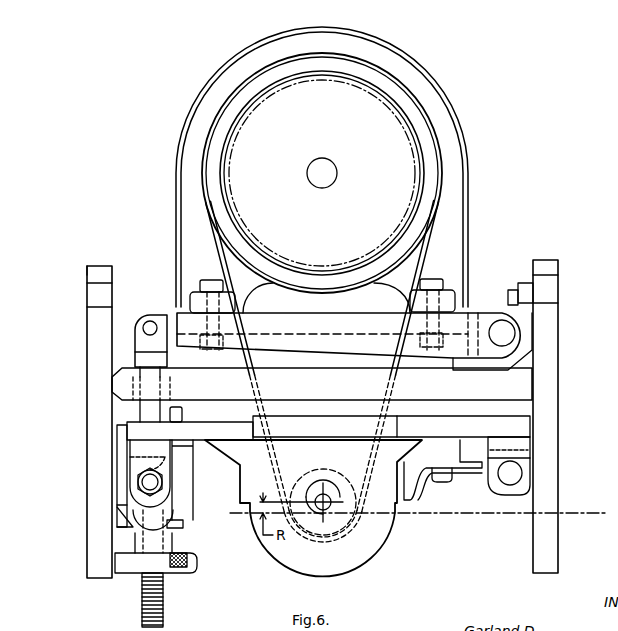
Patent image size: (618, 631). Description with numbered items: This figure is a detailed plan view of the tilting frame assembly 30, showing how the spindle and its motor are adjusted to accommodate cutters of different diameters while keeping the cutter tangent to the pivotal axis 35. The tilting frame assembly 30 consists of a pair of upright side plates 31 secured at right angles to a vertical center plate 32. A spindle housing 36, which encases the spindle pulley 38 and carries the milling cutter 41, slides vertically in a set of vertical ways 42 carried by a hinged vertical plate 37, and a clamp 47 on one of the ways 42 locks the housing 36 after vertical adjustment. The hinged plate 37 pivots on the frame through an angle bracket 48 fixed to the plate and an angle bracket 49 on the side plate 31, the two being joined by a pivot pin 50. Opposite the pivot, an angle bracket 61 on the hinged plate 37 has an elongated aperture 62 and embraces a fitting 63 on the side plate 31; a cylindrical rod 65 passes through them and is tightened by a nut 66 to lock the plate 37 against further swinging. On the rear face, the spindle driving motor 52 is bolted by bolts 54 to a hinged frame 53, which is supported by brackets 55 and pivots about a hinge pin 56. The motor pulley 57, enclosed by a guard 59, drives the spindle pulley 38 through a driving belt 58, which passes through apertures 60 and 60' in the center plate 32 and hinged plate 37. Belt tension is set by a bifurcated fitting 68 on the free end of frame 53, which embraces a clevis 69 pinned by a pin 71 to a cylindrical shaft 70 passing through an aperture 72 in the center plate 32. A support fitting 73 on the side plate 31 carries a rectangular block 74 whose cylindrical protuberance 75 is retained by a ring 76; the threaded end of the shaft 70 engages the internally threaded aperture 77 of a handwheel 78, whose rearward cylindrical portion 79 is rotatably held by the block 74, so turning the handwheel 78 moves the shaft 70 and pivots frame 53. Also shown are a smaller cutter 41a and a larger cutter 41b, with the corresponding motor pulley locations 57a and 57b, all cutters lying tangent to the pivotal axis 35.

The tilting frame assembly 30 is at (68, 282).
The side plates 31 is at (109, 332).
The vertical center plate 32 is at (499, 386).
The pivotal axis 35 is at (588, 514).
The spindle housing 36 is at (375, 550).
The hinged vertical plate 37 is at (508, 432).
The spindle pulley 38 is at (326, 462).
The cutting or milling tool 41 is at (338, 486).
The smaller diameter cutter 41a is at (330, 506).
The larger diameter cutter 41b is at (300, 478).
The vertical ways 42 is at (219, 462).
The clamp 47 is at (420, 492).
The angle bracket 48 is at (531, 440).
The angle bracket 49 is at (531, 487).
The pivot pin 50 is at (499, 477).
The spindle driving motor 52 is at (222, 220).
The hinged frame 53 is at (305, 345).
The bolts 54 is at (212, 280).
The brackets 55 is at (520, 283).
The hinge pin 56 is at (498, 320).
The spindle driving motor pulley 57 is at (251, 244).
The motor pulley location for smaller cutter 57a is at (380, 105).
The motor pulley location for larger cutter 57b is at (275, 256).
The driving belt 58 is at (247, 310).
The guard 59 is at (430, 73).
The aperture 60 is at (322, 384).
The aperture 60' is at (340, 426).
The angle bracket 61 is at (158, 454).
The elongated aperture 62 is at (137, 463).
The fitting 63 is at (115, 505).
The cylindrical rod 65 is at (141, 483).
The nut 66 is at (161, 480).
The bifurcated fitting 68 is at (160, 315).
The clevis 69 is at (168, 358).
The cylindrical shaft 70 is at (165, 619).
The pin 71 is at (144, 322).
The aperture 72 is at (170, 386).
The support fitting 73 is at (115, 434).
The rectangular block 74 is at (185, 527).
The cylindrical protuberance 75 is at (170, 533).
The ring 76 is at (128, 516).
The internally threaded aperture 77 is at (142, 566).
The handwheel 78 is at (185, 573).
The cylindrical portion 79 is at (175, 548).